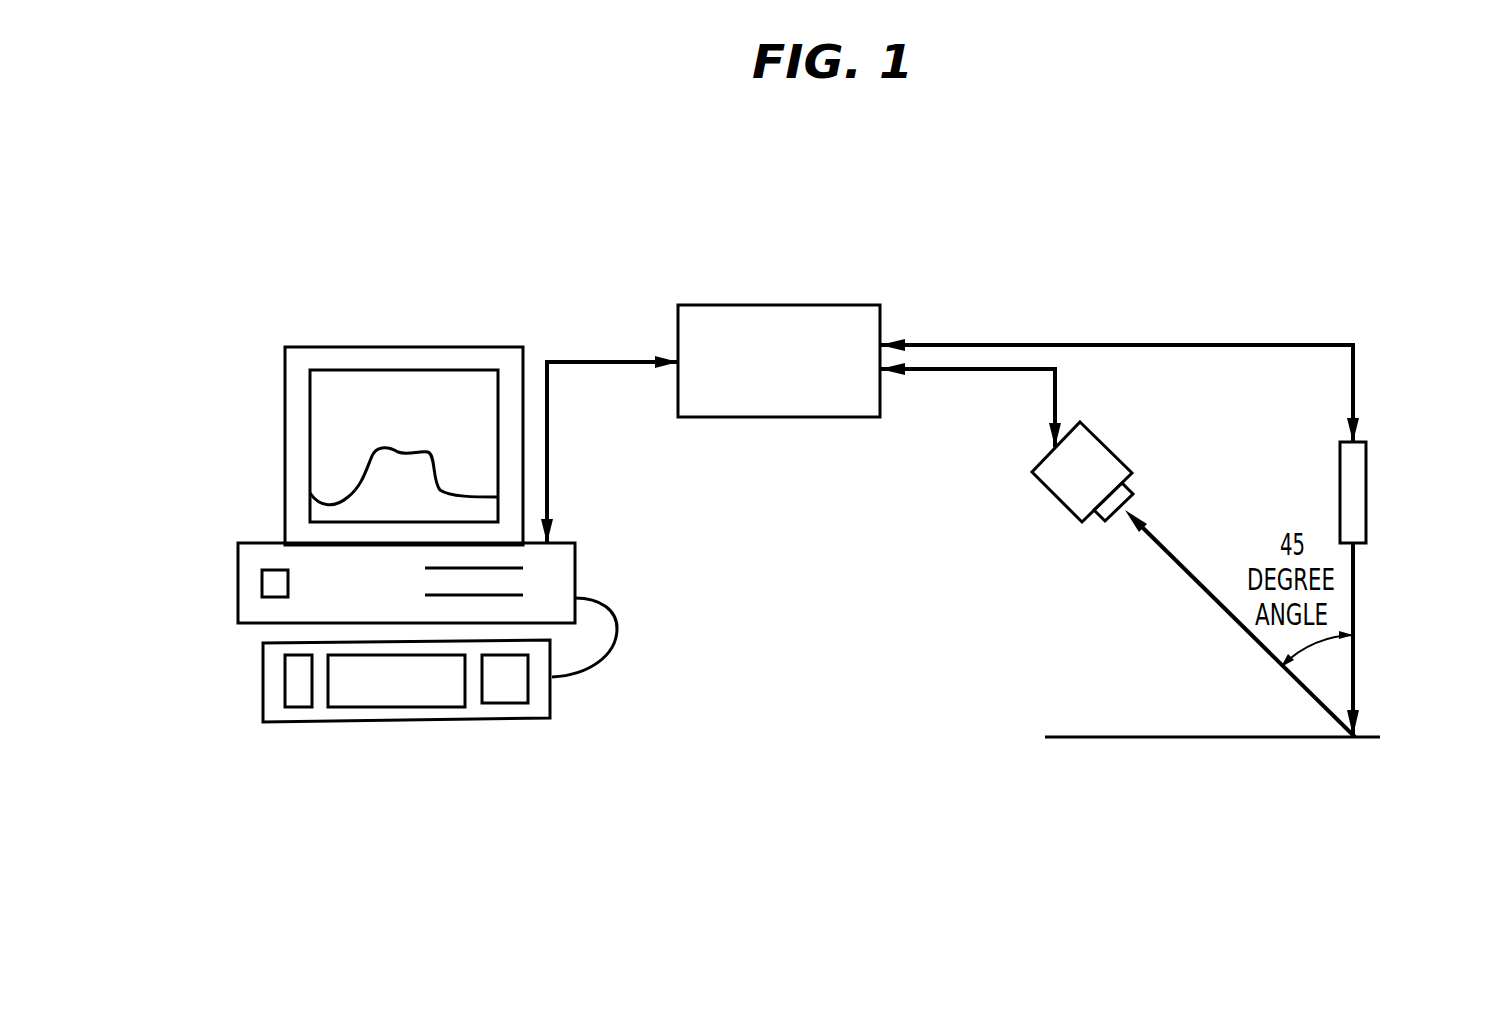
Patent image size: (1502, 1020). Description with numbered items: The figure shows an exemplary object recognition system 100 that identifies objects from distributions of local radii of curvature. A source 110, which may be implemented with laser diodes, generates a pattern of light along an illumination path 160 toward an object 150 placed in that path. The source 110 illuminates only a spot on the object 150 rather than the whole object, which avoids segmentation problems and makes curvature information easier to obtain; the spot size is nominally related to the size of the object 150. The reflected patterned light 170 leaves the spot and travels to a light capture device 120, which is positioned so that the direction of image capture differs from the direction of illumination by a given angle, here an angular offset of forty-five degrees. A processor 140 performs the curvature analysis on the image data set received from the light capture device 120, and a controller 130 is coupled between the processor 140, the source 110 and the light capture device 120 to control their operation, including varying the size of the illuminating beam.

The object recognition system 100 is at (1205, 240).
The source 110 is at (1366, 495).
The light capture device 120 is at (1055, 498).
The controller 130 is at (745, 305).
The processor 140 is at (285, 468).
The object 150 is at (1360, 733).
The illumination path 160 is at (1357, 596).
The reflected patterned light 170 is at (1190, 575).